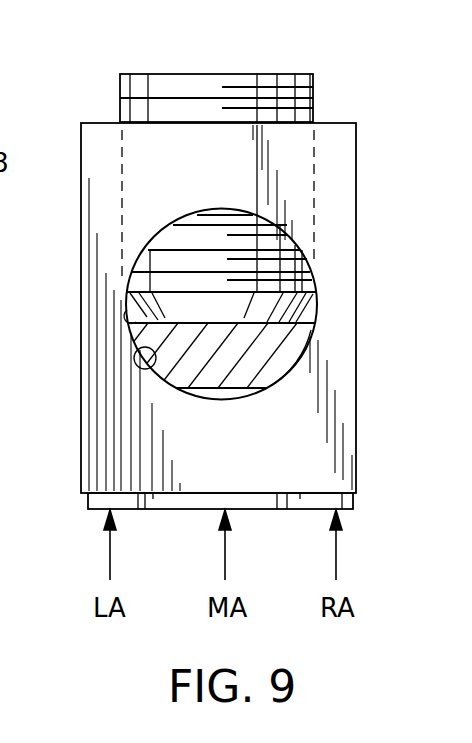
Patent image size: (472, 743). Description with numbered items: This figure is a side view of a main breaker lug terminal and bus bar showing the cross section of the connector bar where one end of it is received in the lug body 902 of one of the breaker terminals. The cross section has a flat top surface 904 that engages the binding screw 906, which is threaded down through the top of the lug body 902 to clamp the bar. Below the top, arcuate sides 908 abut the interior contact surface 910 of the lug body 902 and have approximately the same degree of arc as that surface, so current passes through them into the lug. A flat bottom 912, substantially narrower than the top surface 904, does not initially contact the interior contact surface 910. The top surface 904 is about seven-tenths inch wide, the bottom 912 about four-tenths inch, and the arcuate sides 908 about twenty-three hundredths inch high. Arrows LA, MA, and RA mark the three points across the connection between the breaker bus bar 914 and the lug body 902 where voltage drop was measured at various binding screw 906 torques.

The lug body 902 is at (123, 453).
The flat top surface 904 is at (126, 306).
The binding screw 906 is at (142, 87).
The arcuate sides 908 is at (128, 335).
The interior contact surface 910 is at (150, 368).
The flat bottom 912 is at (230, 401).
The breaker bus bar 914 is at (340, 500).